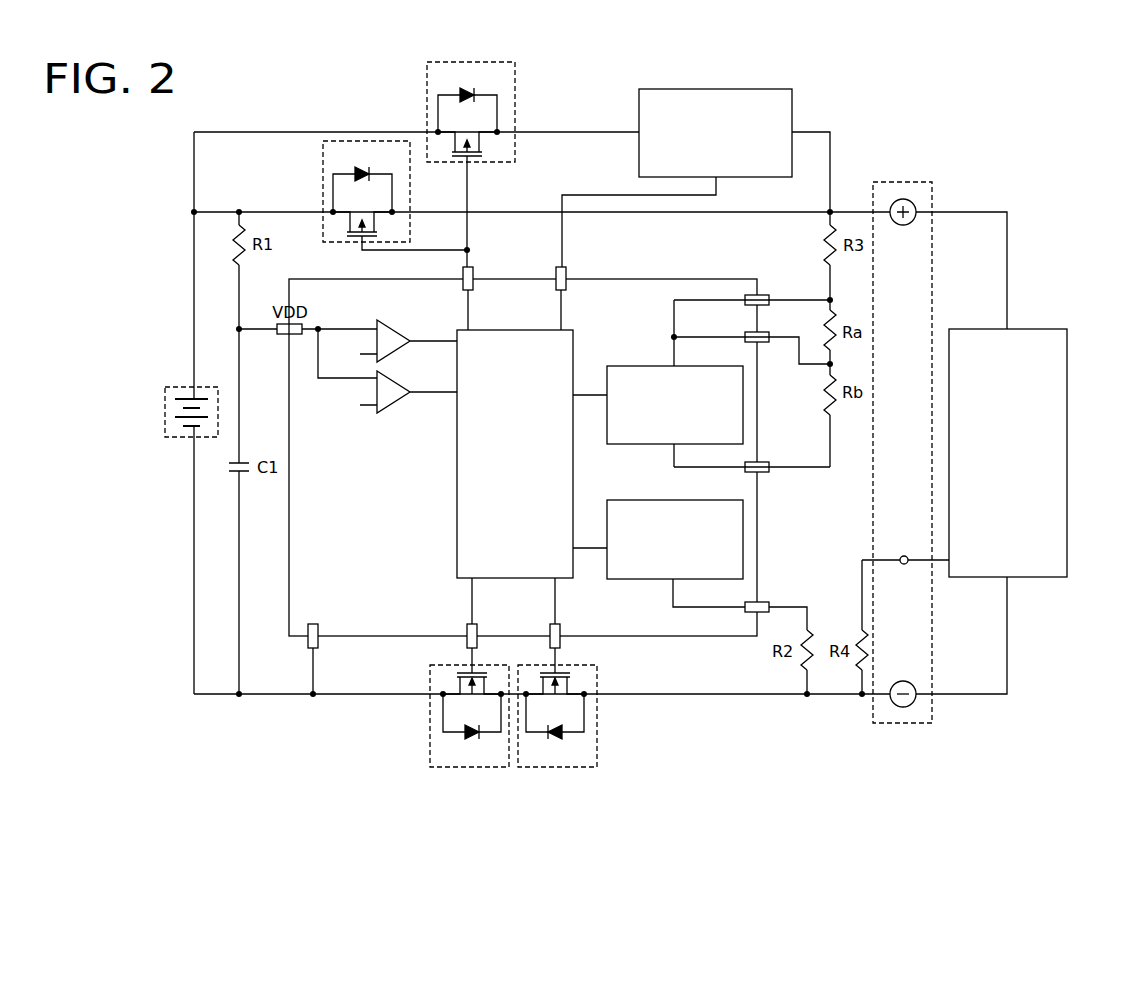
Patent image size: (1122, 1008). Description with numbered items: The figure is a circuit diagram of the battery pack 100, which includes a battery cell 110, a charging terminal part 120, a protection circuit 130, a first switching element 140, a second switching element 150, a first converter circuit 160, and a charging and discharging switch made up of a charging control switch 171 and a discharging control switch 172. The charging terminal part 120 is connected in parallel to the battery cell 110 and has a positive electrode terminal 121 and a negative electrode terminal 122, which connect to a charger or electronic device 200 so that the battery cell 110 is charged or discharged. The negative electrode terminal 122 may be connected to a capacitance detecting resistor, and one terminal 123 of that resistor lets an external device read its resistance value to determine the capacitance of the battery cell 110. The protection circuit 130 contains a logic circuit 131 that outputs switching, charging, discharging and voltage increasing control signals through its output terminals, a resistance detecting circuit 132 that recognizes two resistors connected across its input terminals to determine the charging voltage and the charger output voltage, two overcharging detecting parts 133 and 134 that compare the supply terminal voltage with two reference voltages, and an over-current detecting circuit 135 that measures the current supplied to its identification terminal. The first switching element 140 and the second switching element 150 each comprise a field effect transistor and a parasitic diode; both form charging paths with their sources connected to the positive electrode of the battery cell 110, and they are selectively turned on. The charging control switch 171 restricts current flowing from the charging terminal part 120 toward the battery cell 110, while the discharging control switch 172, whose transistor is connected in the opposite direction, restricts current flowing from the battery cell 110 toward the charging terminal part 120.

The battery pack 100 is at (983, 144).
The battery cell 110 is at (183, 386).
The charging terminal part 120 is at (902, 445).
The positive electrode terminal 121 is at (903, 225).
The negative electrode terminal 122 is at (903, 707).
The terminal of the capacitance detecting resistor 123 is at (904, 556).
The protection circuit 130 is at (543, 473).
The logic circuit 131 is at (515, 454).
The resistance detecting circuit 132 is at (693, 363).
The overcharging detecting part 133 is at (397, 327).
The overcharging detecting part 134 is at (397, 405).
The over-current detecting circuit 135 is at (693, 497).
The first switching element 140 is at (323, 184).
The second switching element 150 is at (515, 91).
The first converter circuit 160 is at (720, 88).
The charging control switch 171 is at (597, 745).
The discharging control switch 172 is at (430, 745).
The charger or electronic device 200 is at (1030, 328).